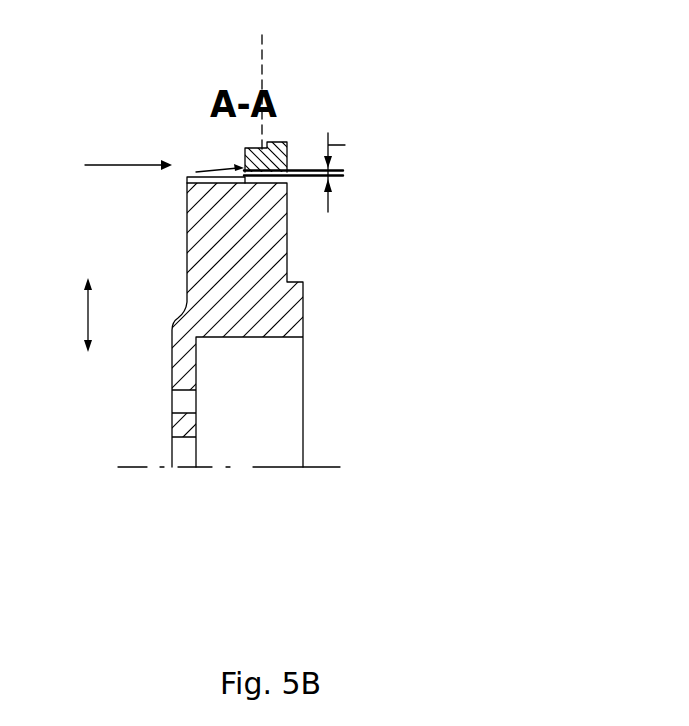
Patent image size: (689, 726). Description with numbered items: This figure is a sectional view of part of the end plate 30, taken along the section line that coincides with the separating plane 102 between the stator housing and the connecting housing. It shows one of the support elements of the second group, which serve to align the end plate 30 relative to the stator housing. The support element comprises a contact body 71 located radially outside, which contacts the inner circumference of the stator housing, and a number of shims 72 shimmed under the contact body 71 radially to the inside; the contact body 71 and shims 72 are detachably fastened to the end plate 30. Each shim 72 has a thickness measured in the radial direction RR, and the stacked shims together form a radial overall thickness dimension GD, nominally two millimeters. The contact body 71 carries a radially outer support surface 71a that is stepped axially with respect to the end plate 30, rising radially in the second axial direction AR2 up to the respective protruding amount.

The end plate 30 is at (262, 262).
The contact body 71 is at (245, 148).
The support surface 71a is at (283, 133).
The shims 72 is at (198, 172).
The separating plane 102 is at (252, 50).
The radial overall thickness dimension GD is at (345, 145).
The radial direction RR is at (62, 315).
The second axial direction AR2 is at (128, 155).